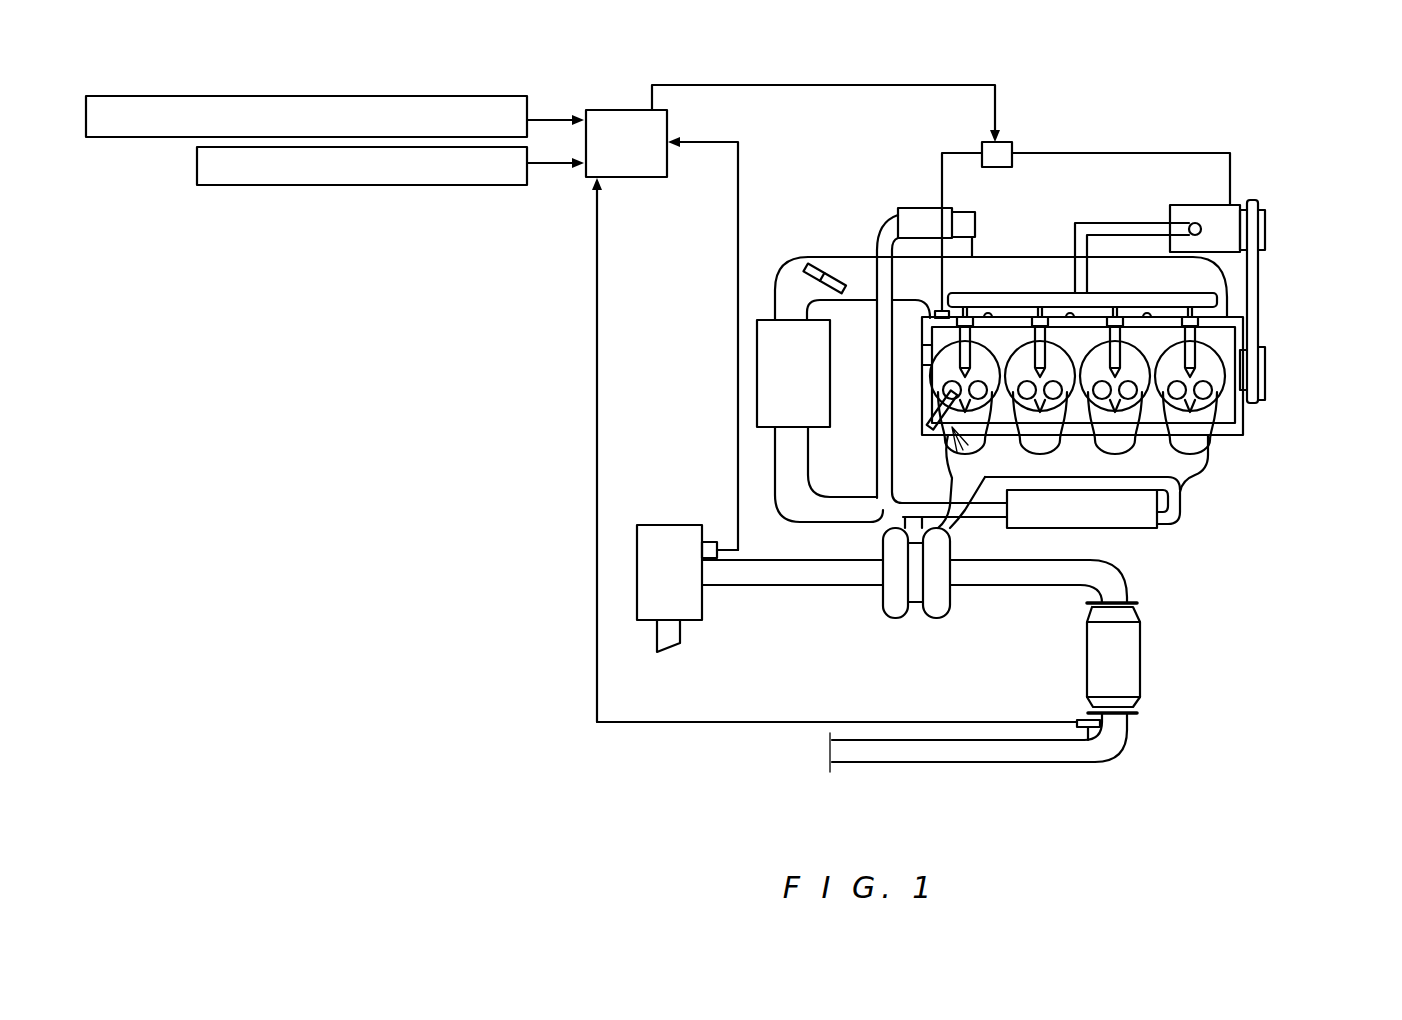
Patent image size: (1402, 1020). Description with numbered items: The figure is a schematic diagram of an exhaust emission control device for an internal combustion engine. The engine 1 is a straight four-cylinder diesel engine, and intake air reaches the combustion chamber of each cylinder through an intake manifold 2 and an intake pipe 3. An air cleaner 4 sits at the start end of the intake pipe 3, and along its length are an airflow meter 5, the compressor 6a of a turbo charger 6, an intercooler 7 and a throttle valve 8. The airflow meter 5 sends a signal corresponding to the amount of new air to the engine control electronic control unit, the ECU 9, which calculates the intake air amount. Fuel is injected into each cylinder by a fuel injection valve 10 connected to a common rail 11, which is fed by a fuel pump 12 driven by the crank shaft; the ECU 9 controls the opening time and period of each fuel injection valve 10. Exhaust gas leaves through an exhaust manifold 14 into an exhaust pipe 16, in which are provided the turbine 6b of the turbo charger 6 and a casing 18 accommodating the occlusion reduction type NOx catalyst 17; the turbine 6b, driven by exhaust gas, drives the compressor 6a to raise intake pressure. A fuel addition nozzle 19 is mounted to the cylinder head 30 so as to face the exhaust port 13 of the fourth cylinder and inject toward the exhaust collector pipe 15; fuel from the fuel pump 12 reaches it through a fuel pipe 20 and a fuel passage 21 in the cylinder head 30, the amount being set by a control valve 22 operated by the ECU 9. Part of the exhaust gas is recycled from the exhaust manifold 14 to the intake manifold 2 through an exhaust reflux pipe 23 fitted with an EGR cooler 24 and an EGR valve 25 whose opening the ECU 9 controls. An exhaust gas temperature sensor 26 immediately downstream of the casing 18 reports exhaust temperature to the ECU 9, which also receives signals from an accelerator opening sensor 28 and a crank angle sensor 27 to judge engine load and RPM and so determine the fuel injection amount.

The engine 1 is at (1254, 432).
The intake manifold 2 is at (1025, 257).
The intake pipe 3 is at (793, 521).
The air cleaner 4 is at (660, 525).
The airflow meter 5 is at (712, 542).
The turbo charger 6 is at (924, 612).
The compressor 6a is at (888, 620).
The turbine 6b is at (955, 612).
The intercooler 7 is at (767, 318).
The throttle valve 8 is at (818, 268).
The engine control electronic control unit (ECU) 9 is at (618, 110).
The fuel injection valve 10 is at (1257, 327).
The common rail 11 is at (1203, 290).
The fuel pump 12 is at (1202, 205).
The exhaust port 13 is at (1222, 437).
The exhaust manifold 14 is at (1210, 462).
The exhaust collector pipe 15 is at (950, 480).
The exhaust pipe 16 is at (1052, 586).
The NOx catalyst 17 is at (1117, 656).
The casing 18 is at (1140, 690).
The fuel addition nozzle 19 is at (922, 428).
The fuel pipe 20 is at (1100, 152).
The fuel passage 21 is at (923, 358).
The control valve 22 is at (1002, 142).
The exhaust reflux pipe 23 is at (877, 240).
The EGR cooler 24 is at (1145, 530).
The EGR valve 25 is at (915, 208).
The exhaust gas temperature sensor 26 is at (1078, 720).
The crank angle sensor 27 is at (424, 185).
The accelerator opening sensor 28 is at (433, 96).
The cylinder head 30 is at (1250, 412).